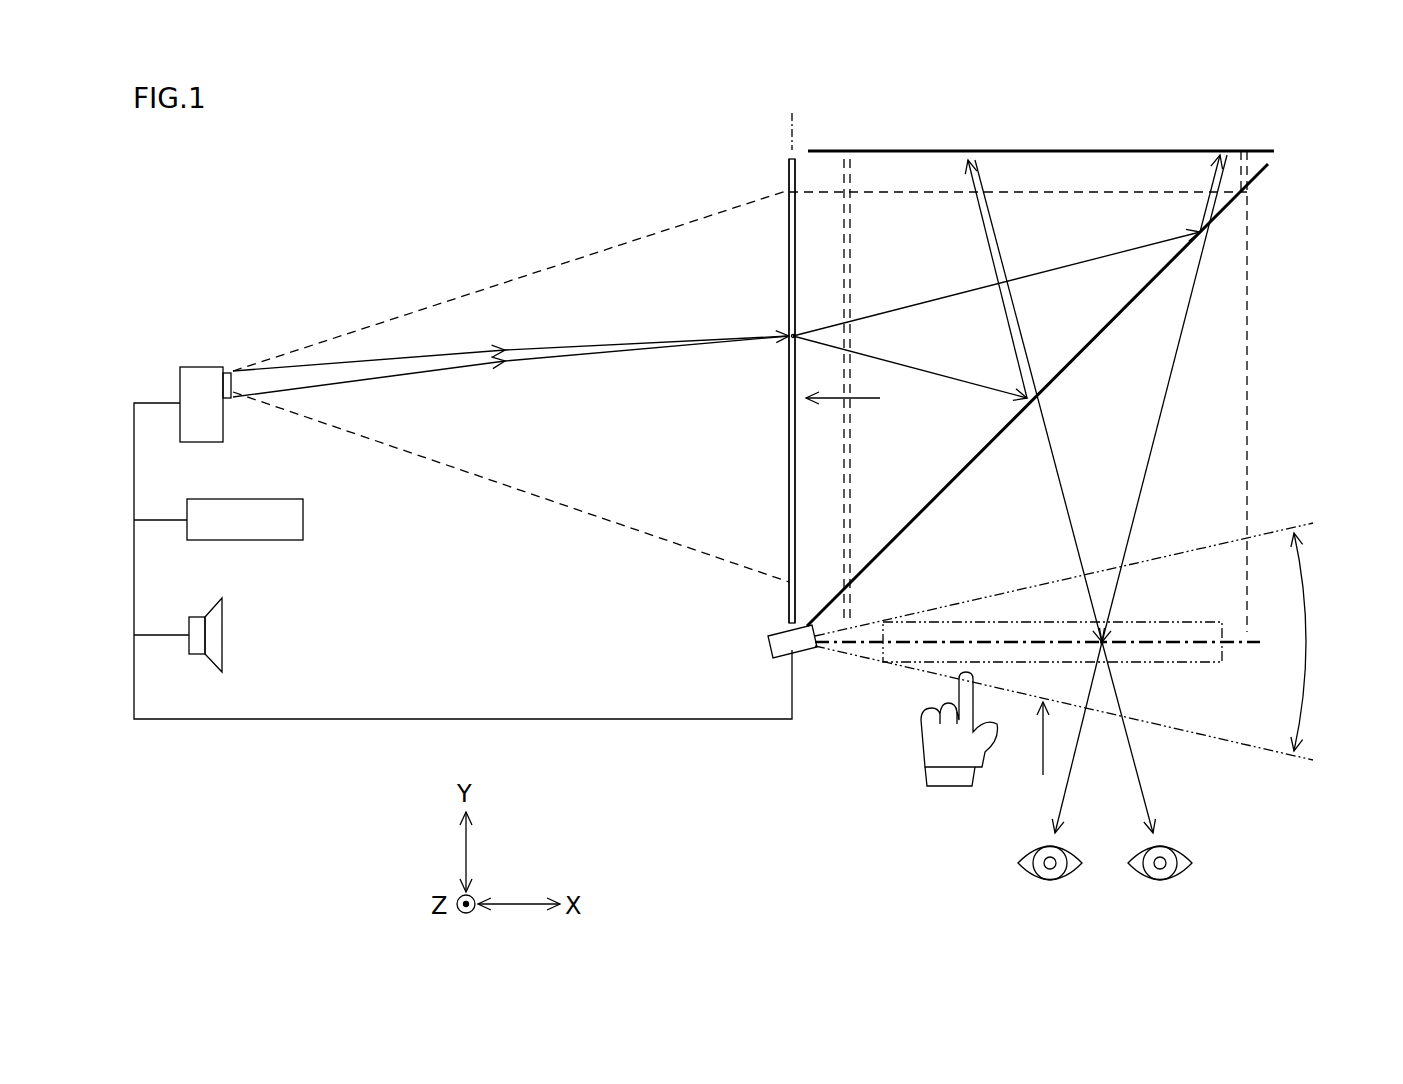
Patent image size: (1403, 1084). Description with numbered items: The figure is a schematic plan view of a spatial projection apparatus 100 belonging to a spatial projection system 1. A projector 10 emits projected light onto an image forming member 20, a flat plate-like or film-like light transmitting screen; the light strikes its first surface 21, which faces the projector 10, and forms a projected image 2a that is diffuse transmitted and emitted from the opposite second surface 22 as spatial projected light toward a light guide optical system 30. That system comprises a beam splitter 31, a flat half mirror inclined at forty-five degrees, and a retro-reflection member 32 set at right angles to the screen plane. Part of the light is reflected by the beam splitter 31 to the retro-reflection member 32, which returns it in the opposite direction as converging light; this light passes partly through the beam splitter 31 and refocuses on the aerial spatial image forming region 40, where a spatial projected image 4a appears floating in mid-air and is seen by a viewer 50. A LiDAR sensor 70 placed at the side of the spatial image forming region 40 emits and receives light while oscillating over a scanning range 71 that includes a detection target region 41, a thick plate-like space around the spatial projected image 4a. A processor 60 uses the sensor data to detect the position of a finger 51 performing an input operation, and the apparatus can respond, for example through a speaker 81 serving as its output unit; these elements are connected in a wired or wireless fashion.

The spatial projection system 1 is at (352, 202).
The spatial projection apparatus 100 is at (352, 250).
The projector 10 is at (201, 367).
The image forming member 20 is at (788, 498).
The first surface 21 is at (788, 452).
The second surface 22 is at (797, 432).
The projected image 2a is at (787, 189).
The light guide optical system 30 is at (1089, 357).
The beam splitter 31 is at (1263, 174).
The retro-reflection member 32 is at (1200, 148).
The spatial image forming region 40 is at (1054, 644).
The detection target region 41 is at (1175, 620).
The spatial projected image 4a is at (1223, 647).
The viewer 50 is at (995, 872).
The finger 51 is at (916, 766).
The processor 60 is at (245, 541).
The LiDAR sensor 70 is at (800, 655).
The scanning range 71 is at (1242, 743).
The speaker 81 is at (223, 637).